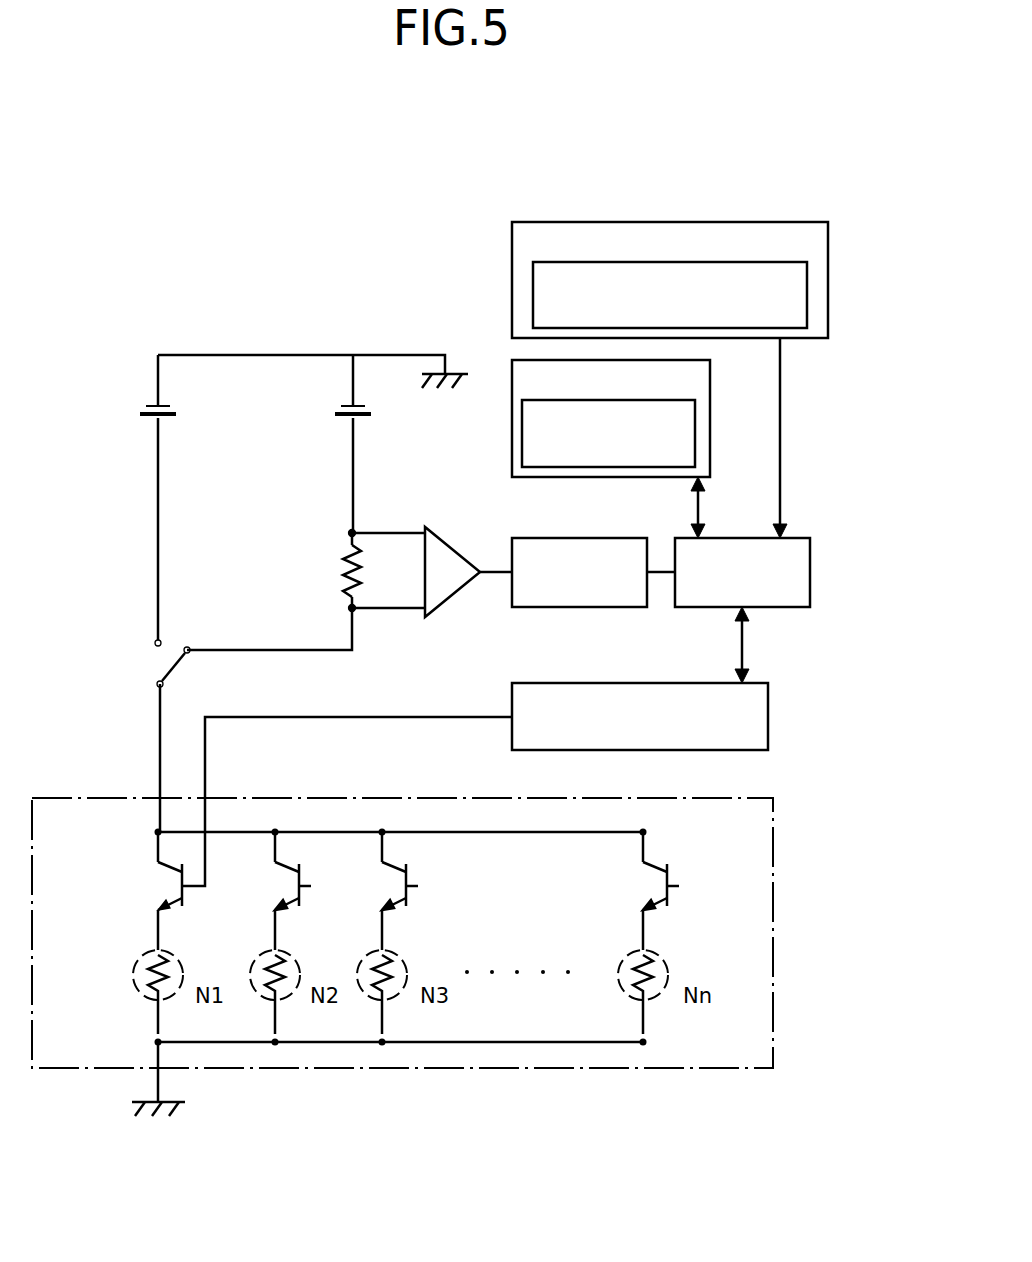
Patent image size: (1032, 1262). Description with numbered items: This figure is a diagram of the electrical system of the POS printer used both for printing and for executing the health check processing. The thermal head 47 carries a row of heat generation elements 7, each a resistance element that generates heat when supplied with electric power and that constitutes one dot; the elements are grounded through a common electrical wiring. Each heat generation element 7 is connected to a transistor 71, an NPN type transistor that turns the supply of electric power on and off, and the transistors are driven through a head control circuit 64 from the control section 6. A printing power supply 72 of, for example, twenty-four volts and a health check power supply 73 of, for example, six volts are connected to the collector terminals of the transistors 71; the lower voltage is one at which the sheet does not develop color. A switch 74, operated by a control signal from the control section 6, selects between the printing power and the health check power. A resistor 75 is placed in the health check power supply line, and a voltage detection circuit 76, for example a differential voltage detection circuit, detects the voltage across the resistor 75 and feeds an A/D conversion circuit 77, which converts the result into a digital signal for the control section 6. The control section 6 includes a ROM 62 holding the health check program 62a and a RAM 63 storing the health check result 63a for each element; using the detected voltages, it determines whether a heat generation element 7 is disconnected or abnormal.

The ROM 62 is at (828, 238).
The health check program 62a is at (807, 293).
The RAM 63 is at (710, 378).
The health check result 63a is at (695, 432).
The control section 6 is at (810, 570).
The A/D conversion circuit 77 is at (578, 607).
The head control circuit 64 is at (768, 715).
The voltage detection circuit 76 is at (438, 556).
The resistor 75 is at (340, 574).
The switch 74 is at (150, 659).
The printing power supply 72 is at (168, 422).
The health check power supply 73 is at (365, 422).
The transistor 71 is at (150, 888).
The heat generation element 7 is at (133, 976).
The thermal head 47 is at (773, 918).